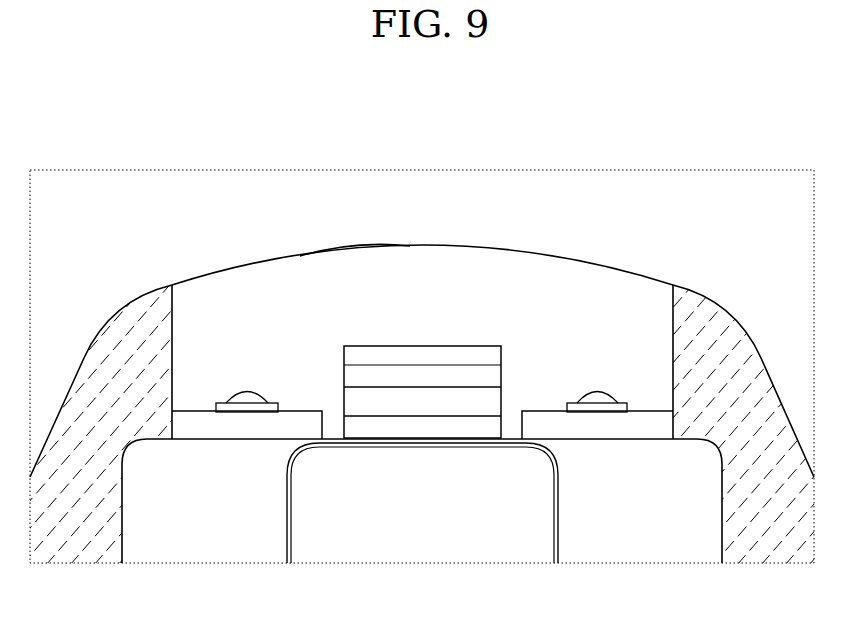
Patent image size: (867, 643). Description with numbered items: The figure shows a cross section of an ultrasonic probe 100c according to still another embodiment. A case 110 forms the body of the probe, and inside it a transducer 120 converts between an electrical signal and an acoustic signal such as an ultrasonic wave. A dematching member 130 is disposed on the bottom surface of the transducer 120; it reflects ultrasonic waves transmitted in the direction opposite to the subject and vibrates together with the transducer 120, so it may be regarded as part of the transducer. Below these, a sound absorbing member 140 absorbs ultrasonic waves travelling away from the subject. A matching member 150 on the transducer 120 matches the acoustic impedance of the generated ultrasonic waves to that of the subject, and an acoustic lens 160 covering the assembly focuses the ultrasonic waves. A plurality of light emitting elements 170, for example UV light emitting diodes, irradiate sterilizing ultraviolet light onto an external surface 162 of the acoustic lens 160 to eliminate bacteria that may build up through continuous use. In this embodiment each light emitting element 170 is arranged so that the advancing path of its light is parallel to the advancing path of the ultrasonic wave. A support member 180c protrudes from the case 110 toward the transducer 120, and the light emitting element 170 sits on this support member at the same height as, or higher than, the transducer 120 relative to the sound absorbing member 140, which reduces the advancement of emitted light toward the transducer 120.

The ultrasonic probe 100c is at (753, 219).
The case 110 is at (128, 332).
The transducer 120 is at (392, 395).
The dematching member 130 is at (453, 424).
The sound absorbing member 140 is at (413, 553).
The matching member 150 is at (505, 350).
The acoustic lens 160 is at (422, 265).
The external surface 162 is at (355, 245).
The light emitting element 170 is at (262, 397).
The support member 180c is at (205, 425).